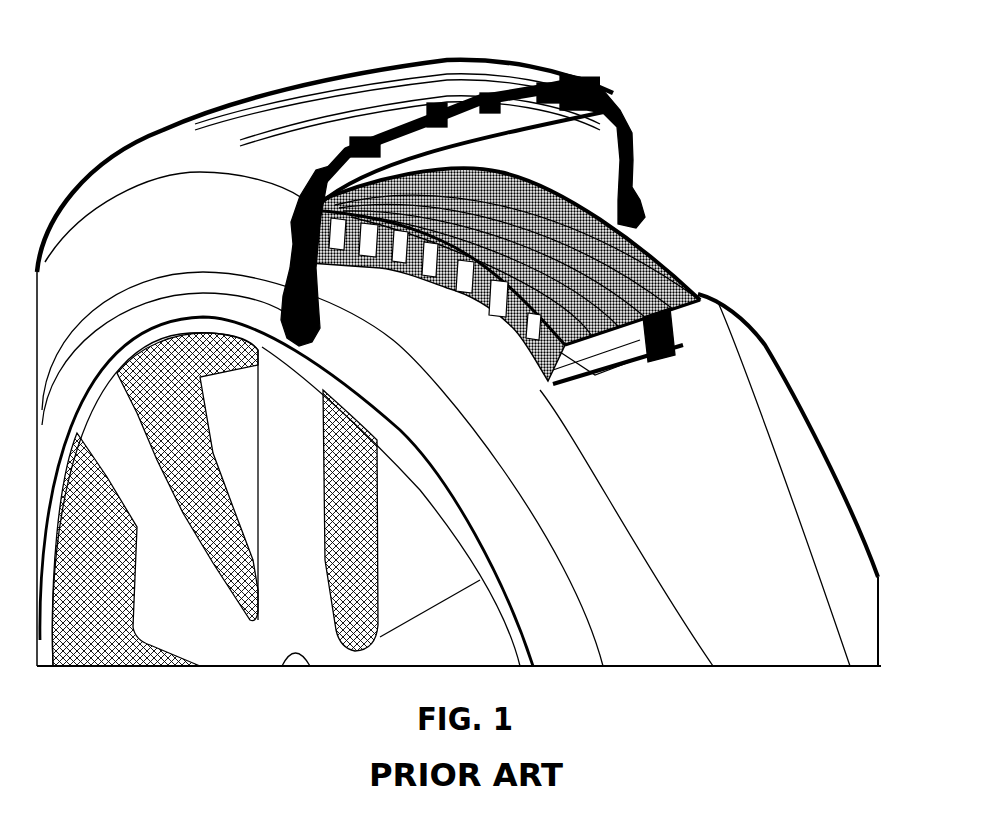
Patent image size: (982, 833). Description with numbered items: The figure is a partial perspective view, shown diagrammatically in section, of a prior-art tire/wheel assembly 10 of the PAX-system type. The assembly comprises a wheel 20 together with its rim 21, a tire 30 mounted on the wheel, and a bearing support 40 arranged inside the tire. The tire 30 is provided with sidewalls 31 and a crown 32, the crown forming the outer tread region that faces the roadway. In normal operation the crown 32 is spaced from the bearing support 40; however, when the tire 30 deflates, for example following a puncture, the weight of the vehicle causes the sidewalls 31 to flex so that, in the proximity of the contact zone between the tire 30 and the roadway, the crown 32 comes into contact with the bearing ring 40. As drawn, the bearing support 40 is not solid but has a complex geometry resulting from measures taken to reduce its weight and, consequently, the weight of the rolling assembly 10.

The tire/wheel assembly 10 is at (459, 392).
The wheel 20 is at (230, 653).
The rim 21 is at (773, 447).
The tire 30 is at (226, 78).
The sidewalls 31 is at (225, 233).
The crown 32 is at (520, 120).
The bearing support 40 is at (652, 272).